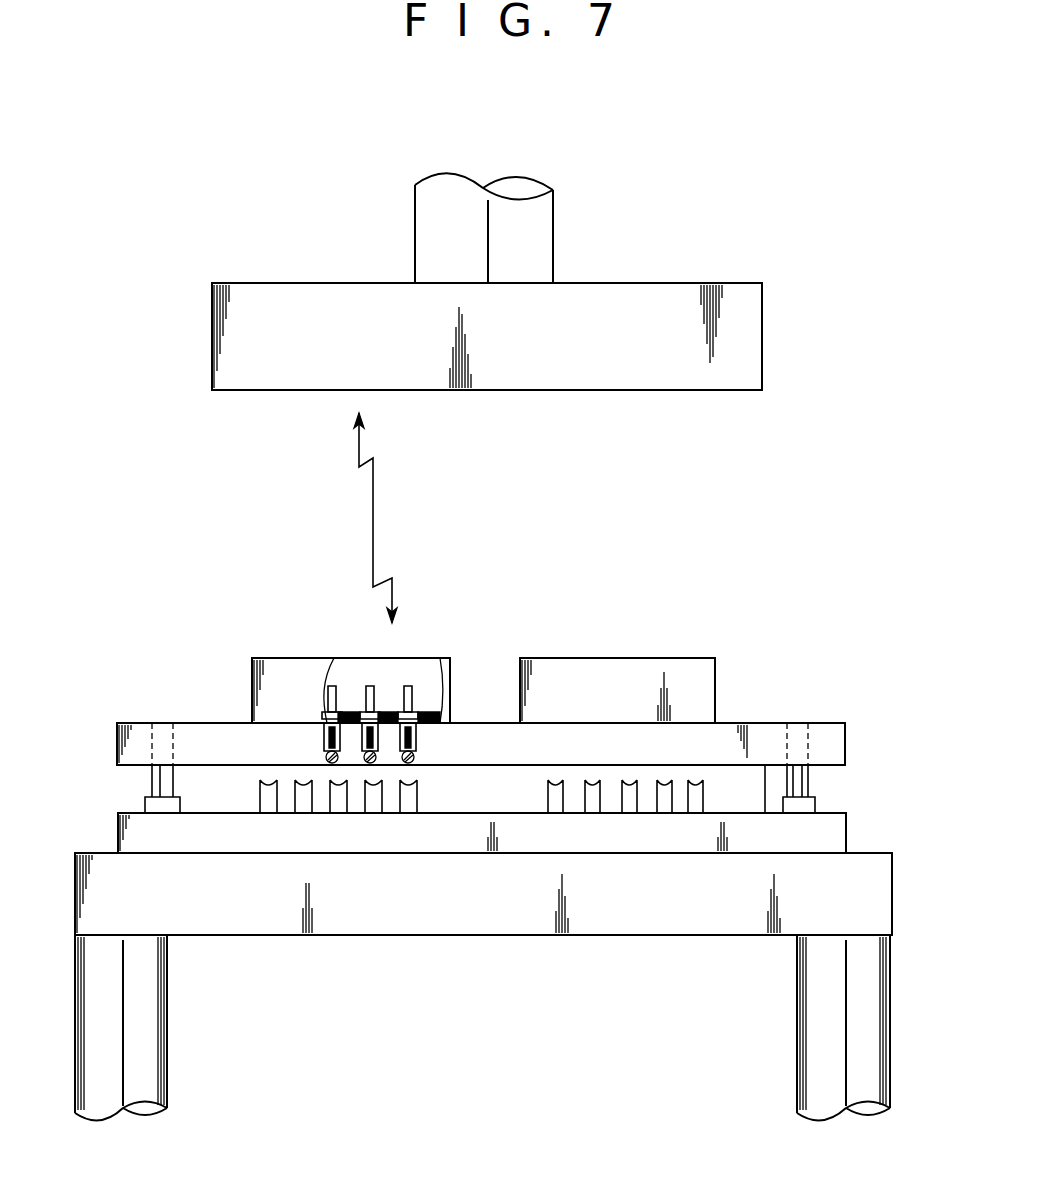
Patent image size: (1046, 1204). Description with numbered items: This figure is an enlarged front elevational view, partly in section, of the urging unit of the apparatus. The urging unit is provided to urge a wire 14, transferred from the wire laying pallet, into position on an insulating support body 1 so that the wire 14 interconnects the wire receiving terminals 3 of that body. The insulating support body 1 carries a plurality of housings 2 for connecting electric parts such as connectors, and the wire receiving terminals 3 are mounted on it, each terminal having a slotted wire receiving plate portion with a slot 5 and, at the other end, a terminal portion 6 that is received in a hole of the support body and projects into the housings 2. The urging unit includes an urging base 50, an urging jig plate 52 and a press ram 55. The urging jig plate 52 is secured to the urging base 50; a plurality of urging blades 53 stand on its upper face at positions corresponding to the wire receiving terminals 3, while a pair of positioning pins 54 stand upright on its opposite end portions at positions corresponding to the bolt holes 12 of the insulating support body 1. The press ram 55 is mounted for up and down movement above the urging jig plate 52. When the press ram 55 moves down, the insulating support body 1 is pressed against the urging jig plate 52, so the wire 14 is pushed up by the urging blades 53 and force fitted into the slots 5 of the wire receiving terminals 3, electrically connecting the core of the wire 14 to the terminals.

The insulating support body 1 is at (732, 722).
The housing 2 is at (252, 665).
The wire receiving terminal 3 is at (407, 777).
The slot 5 is at (415, 740).
The terminal portion 6 is at (408, 700).
The bolt hole 12 is at (803, 740).
The wire 14 is at (409, 762).
The urging base 50 is at (875, 906).
The urging jig plate 52 is at (828, 833).
The urging blade 53 is at (372, 805).
The positioning pin 54 is at (815, 778).
The press ram 55 is at (655, 302).